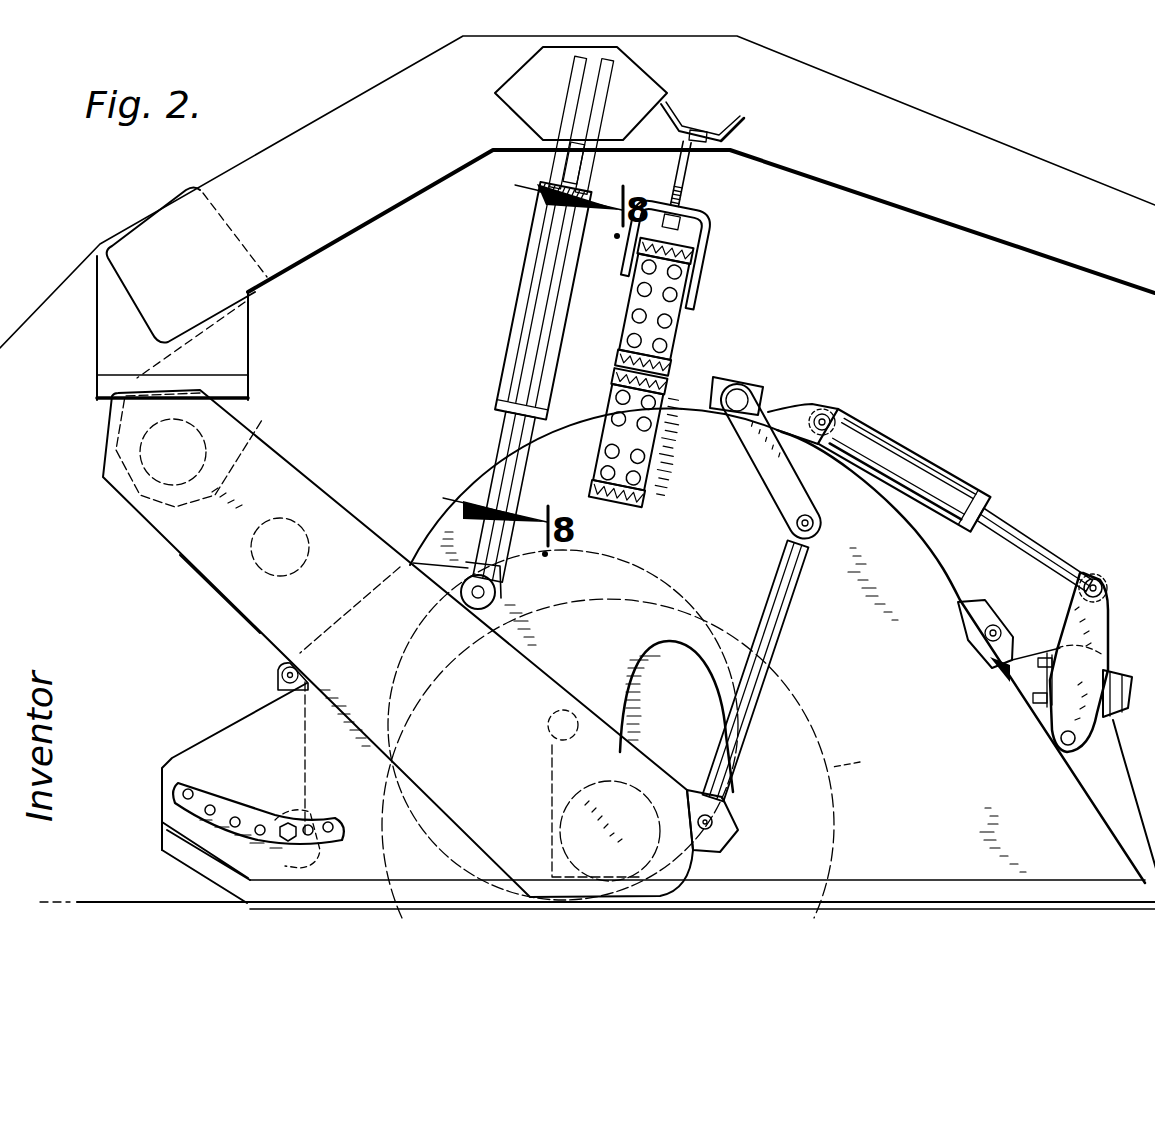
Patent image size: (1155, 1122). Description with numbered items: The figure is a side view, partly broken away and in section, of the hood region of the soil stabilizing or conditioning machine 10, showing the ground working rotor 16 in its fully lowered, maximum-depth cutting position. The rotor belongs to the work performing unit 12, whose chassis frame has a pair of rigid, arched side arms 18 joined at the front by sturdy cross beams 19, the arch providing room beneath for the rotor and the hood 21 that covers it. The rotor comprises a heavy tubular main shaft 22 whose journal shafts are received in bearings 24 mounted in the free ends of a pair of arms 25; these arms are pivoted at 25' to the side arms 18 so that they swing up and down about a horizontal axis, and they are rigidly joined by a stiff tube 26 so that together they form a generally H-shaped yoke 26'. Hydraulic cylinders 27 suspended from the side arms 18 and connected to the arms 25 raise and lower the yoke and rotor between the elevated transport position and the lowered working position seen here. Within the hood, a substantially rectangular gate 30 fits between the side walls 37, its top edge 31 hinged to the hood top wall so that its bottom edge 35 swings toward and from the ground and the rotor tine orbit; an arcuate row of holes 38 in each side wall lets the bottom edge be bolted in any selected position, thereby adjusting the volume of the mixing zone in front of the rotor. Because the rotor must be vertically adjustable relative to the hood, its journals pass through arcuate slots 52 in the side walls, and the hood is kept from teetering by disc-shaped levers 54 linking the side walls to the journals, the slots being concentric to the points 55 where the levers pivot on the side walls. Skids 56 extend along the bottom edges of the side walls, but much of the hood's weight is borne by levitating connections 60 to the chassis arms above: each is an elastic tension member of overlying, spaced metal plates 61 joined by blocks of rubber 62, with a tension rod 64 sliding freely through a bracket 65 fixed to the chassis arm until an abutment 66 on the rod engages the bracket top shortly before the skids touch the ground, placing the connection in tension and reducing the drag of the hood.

The soil stabilizing or conditioning machine 10 is at (1059, 130).
The work performing unit 12 is at (447, 517).
The ground working rotor 16 is at (827, 733).
The side arms 18 is at (915, 125).
The cross beams 19 is at (267, 277).
The hood 21 is at (690, 408).
The main shaft 22 is at (1093, 770).
The bearings 24 is at (548, 827).
The arms 25 is at (398, 643).
The pivot 25' is at (217, 450).
The stiff tube 26 is at (317, 530).
The H-shaped yoke 26' is at (216, 595).
The hydraulic cylinders 27 is at (530, 282).
The gate 30 is at (300, 748).
The top edge 31 is at (286, 663).
The bottom edge 35 is at (322, 857).
The side walls 37 is at (240, 732).
The arcuate row of holes 38 is at (235, 815).
The arcuate slots 52 is at (643, 657).
The levers 54 is at (643, 567).
The pivot points 55 is at (548, 722).
The skids 56 is at (200, 885).
The levitating connections 60 is at (718, 289).
The metal plates 61 is at (673, 315).
The blocks of rubber 62 is at (687, 247).
The tension rod 64 is at (693, 180).
The bracket 65 is at (713, 132).
The abutment 66 is at (712, 143).